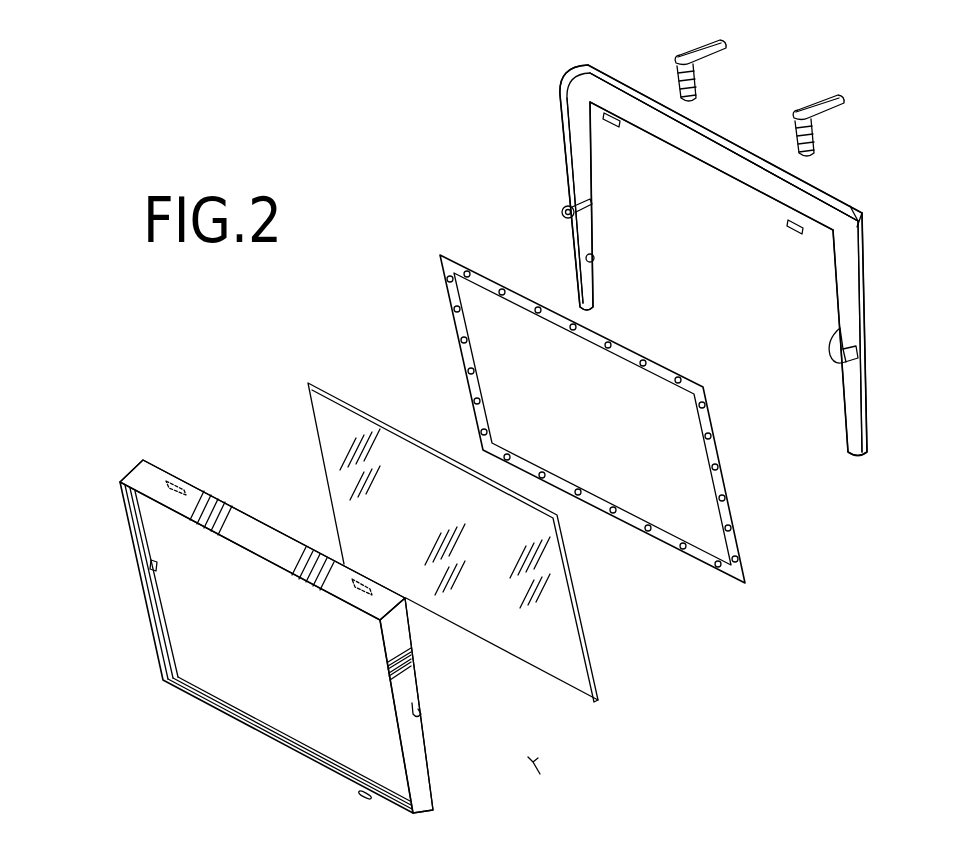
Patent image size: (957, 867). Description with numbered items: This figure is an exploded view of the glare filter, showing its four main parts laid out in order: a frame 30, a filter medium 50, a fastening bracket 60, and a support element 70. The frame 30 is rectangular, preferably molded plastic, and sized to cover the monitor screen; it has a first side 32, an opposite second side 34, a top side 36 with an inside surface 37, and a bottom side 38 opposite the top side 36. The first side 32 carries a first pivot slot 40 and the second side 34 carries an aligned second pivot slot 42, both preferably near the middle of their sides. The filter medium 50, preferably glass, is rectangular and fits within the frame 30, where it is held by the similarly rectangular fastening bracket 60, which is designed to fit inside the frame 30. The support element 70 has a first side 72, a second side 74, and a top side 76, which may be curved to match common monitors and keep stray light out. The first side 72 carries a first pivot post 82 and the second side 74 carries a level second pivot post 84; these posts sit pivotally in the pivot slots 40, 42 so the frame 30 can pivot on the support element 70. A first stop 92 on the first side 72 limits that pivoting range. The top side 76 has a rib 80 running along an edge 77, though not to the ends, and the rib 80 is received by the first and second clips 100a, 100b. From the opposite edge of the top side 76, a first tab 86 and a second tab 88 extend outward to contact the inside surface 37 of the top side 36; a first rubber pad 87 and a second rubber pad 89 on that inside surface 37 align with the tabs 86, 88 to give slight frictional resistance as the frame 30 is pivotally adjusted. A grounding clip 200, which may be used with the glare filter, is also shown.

The frame 30 is at (158, 682).
The first side 32 is at (403, 663).
The second side 34 is at (130, 527).
The top side 36 is at (217, 507).
The inside surface 37 is at (280, 520).
The bottom side 38 is at (260, 732).
The first pivot slot 40 is at (416, 712).
The second pivot slot 42 is at (158, 568).
The filter medium 50 is at (583, 618).
The fastening bracket 60 is at (720, 472).
The support element 70 is at (862, 213).
The first side 72 is at (858, 402).
The second side 74 is at (577, 130).
The top side 76 is at (580, 87).
The edge 77 is at (850, 203).
The rib 80 is at (642, 100).
The first pivot post 82 is at (833, 332).
The second pivot post 84 is at (563, 203).
The first tab 86 is at (797, 224).
The first rubber pad 87 is at (363, 587).
The second tab 88 is at (605, 117).
The second rubber pad 89 is at (180, 488).
The first stop 92 is at (594, 261).
The first clip 100a is at (840, 100).
The second clip 100b is at (717, 47).
The grounding clip 200 is at (545, 768).